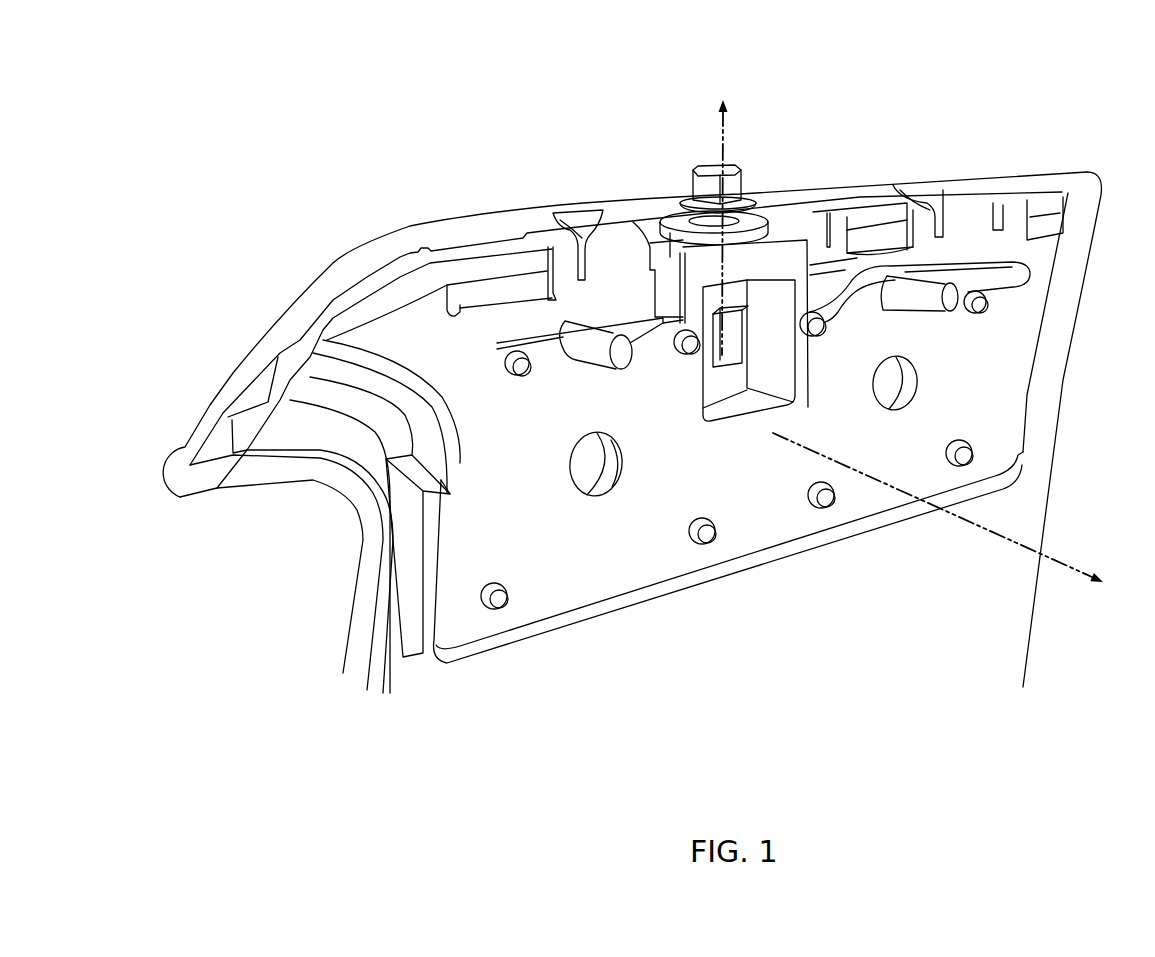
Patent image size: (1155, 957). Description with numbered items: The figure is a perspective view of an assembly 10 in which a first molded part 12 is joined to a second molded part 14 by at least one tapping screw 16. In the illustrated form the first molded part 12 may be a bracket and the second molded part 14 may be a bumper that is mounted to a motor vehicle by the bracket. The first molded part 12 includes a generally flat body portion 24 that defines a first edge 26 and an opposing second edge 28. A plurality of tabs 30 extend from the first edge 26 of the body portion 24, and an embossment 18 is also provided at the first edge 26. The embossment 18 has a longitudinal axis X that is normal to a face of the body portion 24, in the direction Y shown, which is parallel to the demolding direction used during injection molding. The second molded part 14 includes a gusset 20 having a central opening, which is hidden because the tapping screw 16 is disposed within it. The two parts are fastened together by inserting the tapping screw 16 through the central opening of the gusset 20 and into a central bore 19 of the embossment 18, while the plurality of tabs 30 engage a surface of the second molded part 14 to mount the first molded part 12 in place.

The assembly 10 is at (243, 126).
The first molded part 12 is at (558, 592).
The second molded part 14 is at (327, 445).
The tapping screw 16 is at (738, 185).
The embossment 18 is at (707, 303).
The central bore 19 is at (721, 368).
The gusset 20 is at (677, 195).
The body portion 24 is at (782, 518).
The first edge 26 is at (1044, 215).
The second edge 28 is at (1015, 495).
The tabs 30 is at (582, 223).